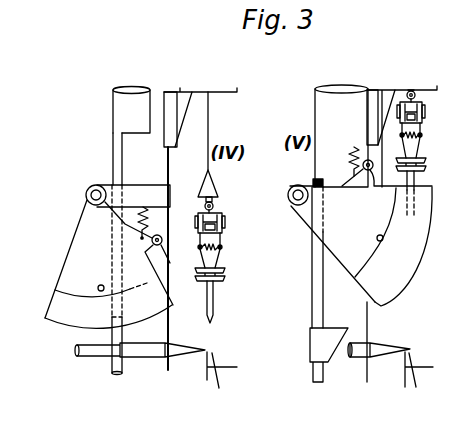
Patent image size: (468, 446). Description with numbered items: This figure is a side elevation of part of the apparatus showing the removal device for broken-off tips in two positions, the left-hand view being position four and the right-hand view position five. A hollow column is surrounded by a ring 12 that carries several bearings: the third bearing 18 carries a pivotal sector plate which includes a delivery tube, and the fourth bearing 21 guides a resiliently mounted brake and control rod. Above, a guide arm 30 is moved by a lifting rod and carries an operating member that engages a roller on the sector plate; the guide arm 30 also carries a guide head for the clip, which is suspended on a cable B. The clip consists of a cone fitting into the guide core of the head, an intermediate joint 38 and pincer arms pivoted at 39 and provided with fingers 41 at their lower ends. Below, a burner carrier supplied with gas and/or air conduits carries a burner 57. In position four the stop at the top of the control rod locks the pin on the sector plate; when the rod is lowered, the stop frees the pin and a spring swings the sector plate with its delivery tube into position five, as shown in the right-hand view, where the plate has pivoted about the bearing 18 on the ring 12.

The ring 12 is at (172, 188).
The third bearing 18 is at (96, 185).
The fourth bearing 21 is at (122, 186).
The guide arm 30 is at (172, 91).
The intermediate joint 38 is at (214, 205).
The pivot 39 is at (225, 222).
The fingers 41 is at (224, 276).
The burner 57 is at (150, 358).
The cable B is at (209, 128).